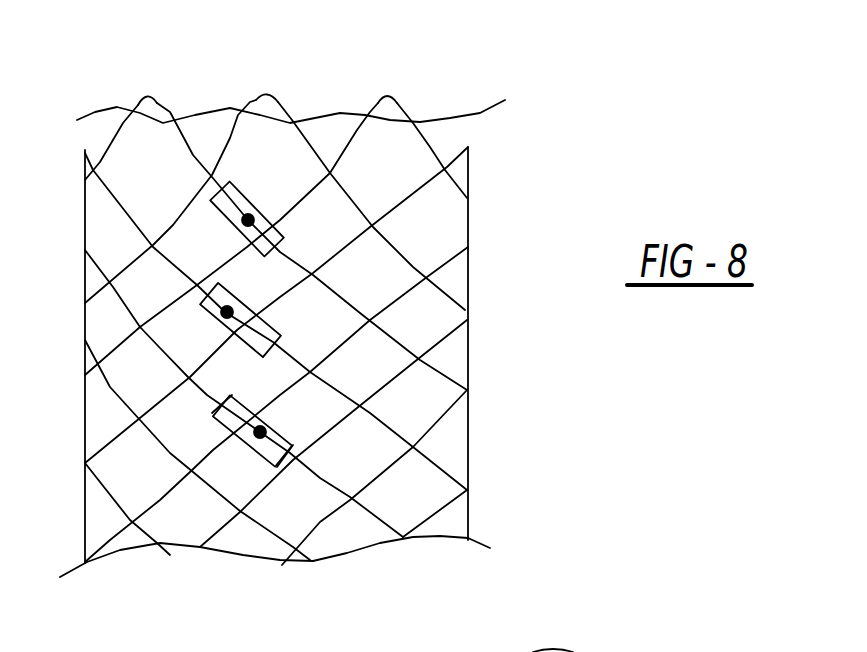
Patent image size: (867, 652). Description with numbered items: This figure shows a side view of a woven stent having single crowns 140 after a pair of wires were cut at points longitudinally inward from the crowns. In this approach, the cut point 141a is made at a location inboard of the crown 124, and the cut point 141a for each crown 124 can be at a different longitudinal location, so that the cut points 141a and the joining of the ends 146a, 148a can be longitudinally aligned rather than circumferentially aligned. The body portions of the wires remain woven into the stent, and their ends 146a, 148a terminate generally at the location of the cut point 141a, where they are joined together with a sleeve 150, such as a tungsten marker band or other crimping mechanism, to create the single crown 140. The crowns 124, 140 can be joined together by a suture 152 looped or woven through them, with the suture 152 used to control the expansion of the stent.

The single crown 140 is at (147, 95).
The suture 152 is at (478, 110).
The cut point 141a is at (395, 313).
The sleeve 150 is at (386, 320).
The end of body portion 146a is at (207, 395).
The end of body portion 148a is at (292, 455).
The crown 124 is at (608, 645).